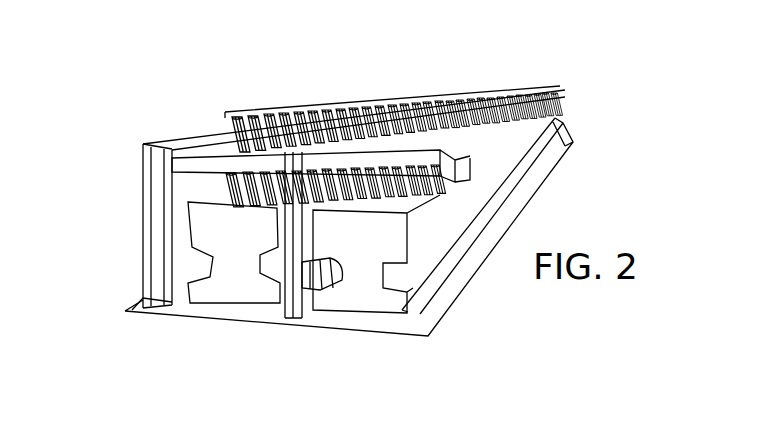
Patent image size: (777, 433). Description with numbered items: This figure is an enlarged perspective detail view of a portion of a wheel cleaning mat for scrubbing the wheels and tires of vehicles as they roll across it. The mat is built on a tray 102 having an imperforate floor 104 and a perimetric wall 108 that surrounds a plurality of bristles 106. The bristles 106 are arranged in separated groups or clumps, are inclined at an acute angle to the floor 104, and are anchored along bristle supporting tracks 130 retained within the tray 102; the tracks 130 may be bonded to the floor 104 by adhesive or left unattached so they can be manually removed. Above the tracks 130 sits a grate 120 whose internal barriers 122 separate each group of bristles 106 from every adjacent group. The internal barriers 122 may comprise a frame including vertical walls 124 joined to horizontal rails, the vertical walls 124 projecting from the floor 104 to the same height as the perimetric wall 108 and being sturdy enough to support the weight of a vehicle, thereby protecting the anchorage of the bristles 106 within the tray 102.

The tray 102 is at (132, 178).
The imperforate floor 104 is at (428, 318).
The bristles 106 is at (520, 90).
The perimetric wall 108 is at (143, 217).
The grate 120 is at (210, 158).
The internal barriers 122 is at (293, 262).
The vertical walls 124 is at (143, 298).
The bristle supporting tracks 130 is at (217, 285).